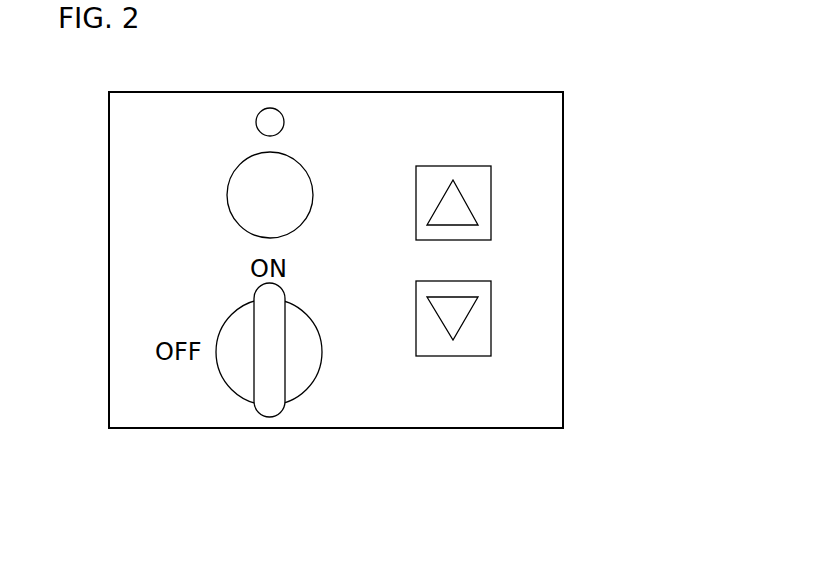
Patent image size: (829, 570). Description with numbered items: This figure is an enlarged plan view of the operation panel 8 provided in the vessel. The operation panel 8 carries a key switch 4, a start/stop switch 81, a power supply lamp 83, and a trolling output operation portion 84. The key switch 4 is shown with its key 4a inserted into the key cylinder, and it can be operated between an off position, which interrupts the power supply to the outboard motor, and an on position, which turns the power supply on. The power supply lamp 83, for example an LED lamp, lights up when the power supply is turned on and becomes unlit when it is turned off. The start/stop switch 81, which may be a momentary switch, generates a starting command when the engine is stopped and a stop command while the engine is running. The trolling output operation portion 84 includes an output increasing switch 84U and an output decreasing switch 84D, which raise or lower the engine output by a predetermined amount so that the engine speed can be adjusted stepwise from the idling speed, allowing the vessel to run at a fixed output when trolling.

The operation panel 8 is at (528, 84).
The power supply lamp 83 is at (270, 120).
The start/stop switch 81 is at (244, 196).
The key switch 4 is at (305, 375).
The key 4a is at (263, 408).
The trolling output operation portion 84 is at (558, 261).
The output increasing switch 84U is at (482, 202).
The output decreasing switch 84D is at (528, 318).